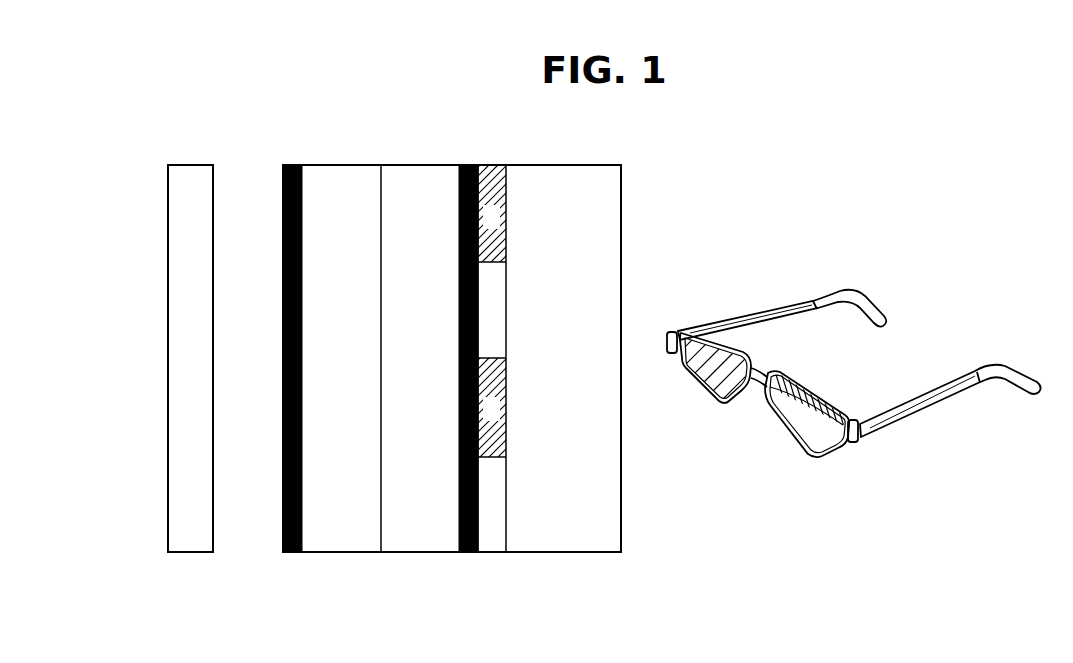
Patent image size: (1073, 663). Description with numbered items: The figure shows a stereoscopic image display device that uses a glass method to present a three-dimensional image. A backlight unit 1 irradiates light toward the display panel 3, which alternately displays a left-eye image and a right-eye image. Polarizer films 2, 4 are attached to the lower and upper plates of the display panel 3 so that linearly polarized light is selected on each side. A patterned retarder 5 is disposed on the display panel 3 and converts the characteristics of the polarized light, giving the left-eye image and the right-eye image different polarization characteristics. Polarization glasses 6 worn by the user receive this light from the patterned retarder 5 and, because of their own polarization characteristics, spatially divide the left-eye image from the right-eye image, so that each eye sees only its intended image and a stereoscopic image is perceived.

The backlight unit 1 is at (190, 553).
The polarizer film 2 is at (292, 553).
The display panel 3 is at (303, 570).
The polarizer film 4 is at (469, 553).
The patterned retarder 5 is at (621, 575).
The polarization glasses 6 is at (770, 308).